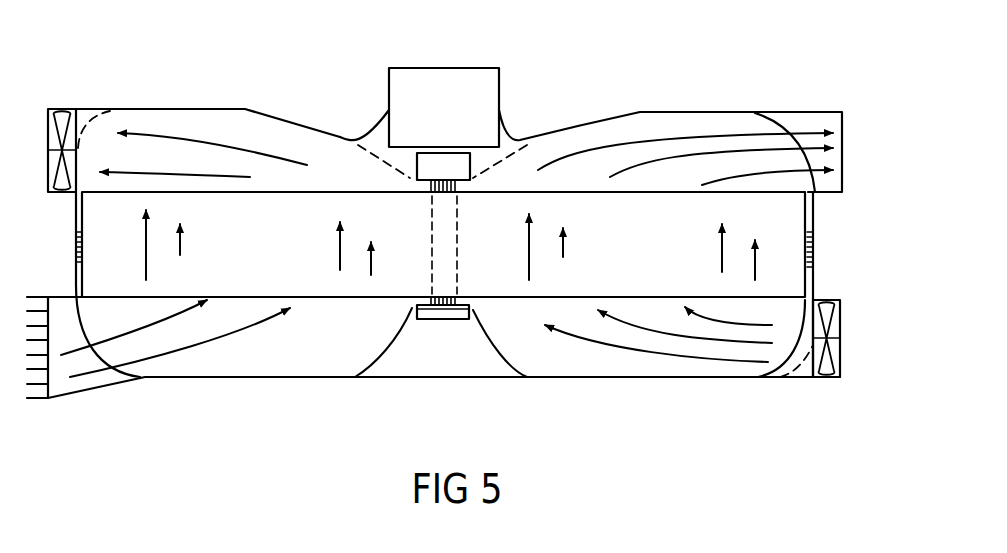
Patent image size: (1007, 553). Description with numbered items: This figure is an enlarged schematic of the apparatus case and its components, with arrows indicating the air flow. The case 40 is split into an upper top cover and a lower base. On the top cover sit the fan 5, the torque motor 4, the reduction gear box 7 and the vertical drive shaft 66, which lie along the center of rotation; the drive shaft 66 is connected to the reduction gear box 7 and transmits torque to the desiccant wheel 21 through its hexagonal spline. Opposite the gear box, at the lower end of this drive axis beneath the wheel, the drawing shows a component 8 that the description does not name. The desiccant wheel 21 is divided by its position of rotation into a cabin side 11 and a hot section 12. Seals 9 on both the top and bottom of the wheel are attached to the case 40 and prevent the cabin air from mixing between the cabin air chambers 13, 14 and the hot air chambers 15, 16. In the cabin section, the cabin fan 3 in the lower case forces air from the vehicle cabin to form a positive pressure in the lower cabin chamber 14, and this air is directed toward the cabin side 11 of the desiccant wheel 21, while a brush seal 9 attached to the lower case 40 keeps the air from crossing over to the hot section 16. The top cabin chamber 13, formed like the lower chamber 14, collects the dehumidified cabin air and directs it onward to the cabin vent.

The cabin fan 3 is at (818, 378).
The torque motor 4 is at (443, 68).
The fan 5 is at (62, 108).
The reduction gear box 7 is at (510, 142).
The lower heater block 8 is at (455, 320).
The seal 9 is at (443, 196).
The cabin side of the desiccant wheel 11 is at (587, 277).
The hot section of the desiccant wheel 12 is at (267, 262).
The top cabin chamber 13 is at (690, 127).
The lower cabin chamber 14 is at (667, 368).
The hot air chamber 15 is at (173, 125).
The hot air chamber 16 is at (223, 350).
The desiccant wheel 21 is at (320, 285).
The case 40 is at (650, 112).
The vertical drive shaft 66 is at (433, 263).